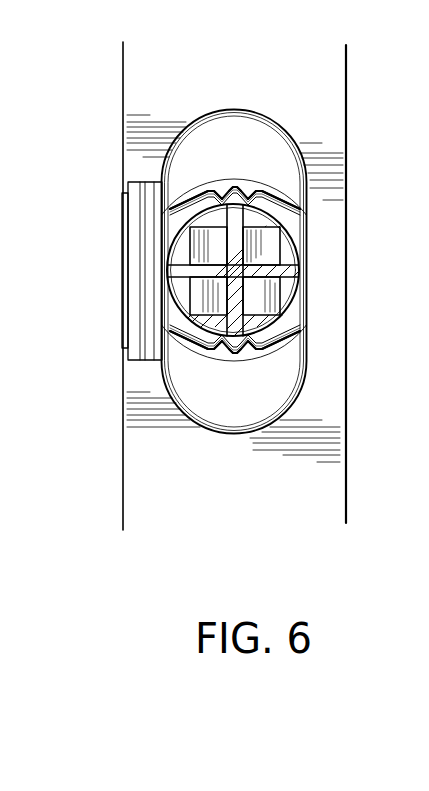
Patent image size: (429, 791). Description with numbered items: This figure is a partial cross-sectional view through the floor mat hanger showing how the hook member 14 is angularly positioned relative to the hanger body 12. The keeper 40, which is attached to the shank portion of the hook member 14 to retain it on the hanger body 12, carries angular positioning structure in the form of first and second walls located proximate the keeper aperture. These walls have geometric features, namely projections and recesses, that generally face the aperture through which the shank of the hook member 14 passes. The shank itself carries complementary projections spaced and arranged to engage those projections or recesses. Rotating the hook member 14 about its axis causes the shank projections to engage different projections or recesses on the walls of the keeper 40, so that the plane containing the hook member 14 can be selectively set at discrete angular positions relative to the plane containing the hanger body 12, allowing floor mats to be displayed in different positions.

The hanger body 12 is at (121, 85).
The hook member 14 is at (307, 268).
The keeper 40 is at (273, 115).